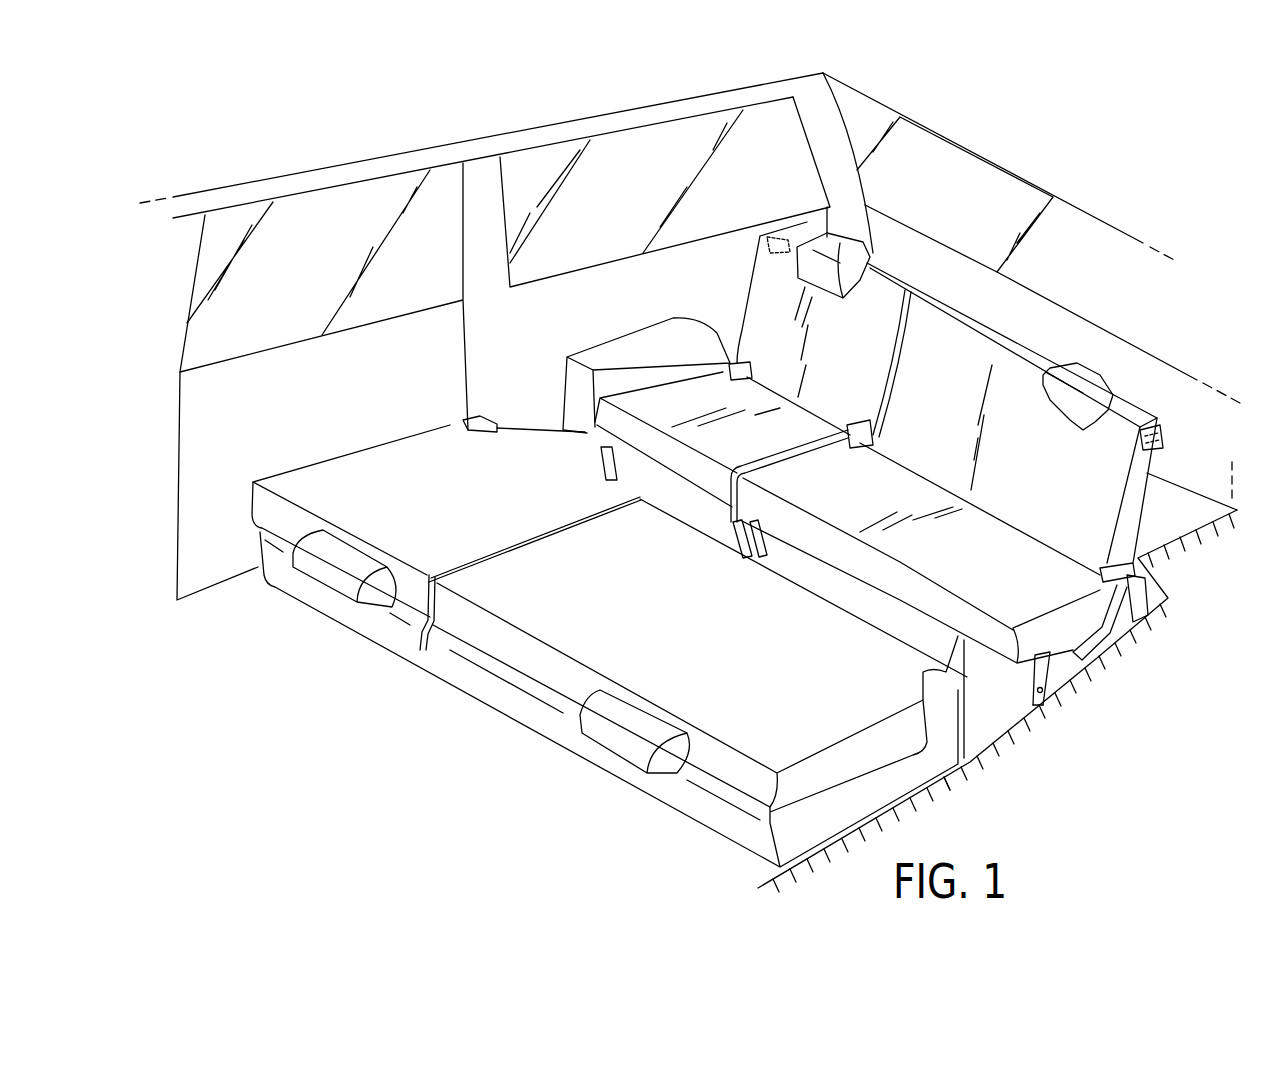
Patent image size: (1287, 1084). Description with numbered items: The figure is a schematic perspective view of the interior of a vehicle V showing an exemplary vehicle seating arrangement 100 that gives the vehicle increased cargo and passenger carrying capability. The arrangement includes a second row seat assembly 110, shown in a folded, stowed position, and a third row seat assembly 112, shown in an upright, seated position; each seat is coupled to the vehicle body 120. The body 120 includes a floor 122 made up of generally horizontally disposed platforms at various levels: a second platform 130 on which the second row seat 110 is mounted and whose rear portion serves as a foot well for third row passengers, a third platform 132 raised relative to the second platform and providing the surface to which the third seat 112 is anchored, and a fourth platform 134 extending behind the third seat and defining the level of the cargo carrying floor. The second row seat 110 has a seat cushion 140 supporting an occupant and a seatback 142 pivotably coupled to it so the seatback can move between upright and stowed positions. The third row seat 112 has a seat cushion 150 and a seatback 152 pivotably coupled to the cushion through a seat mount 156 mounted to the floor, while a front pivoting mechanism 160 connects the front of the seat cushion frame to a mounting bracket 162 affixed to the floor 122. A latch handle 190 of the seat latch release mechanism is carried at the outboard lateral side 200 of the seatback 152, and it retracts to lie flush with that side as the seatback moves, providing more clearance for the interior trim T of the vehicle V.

The vehicle seating arrangement 100 is at (690, 325).
The second row seat assembly 110 is at (608, 604).
The third row seat assembly 112 is at (1052, 336).
The vehicle body 120 is at (927, 484).
The floor 122 is at (974, 762).
The second platform 130 is at (860, 820).
The third platform 132 is at (1130, 622).
The fourth platform 134 is at (1163, 527).
The seat cushion 140 is at (710, 813).
The seatback 142 is at (503, 647).
The seat cushion 150 is at (998, 474).
The seatback 152 is at (957, 360).
The seat mount 156 is at (1102, 640).
The front pivoting mechanism 160 is at (1052, 668).
The mounting bracket 162 is at (1045, 710).
The latch handle 190 is at (1168, 435).
The outboard lateral side 200 is at (1137, 503).
The vehicle V is at (745, 83).
The interior trim T is at (697, 273).